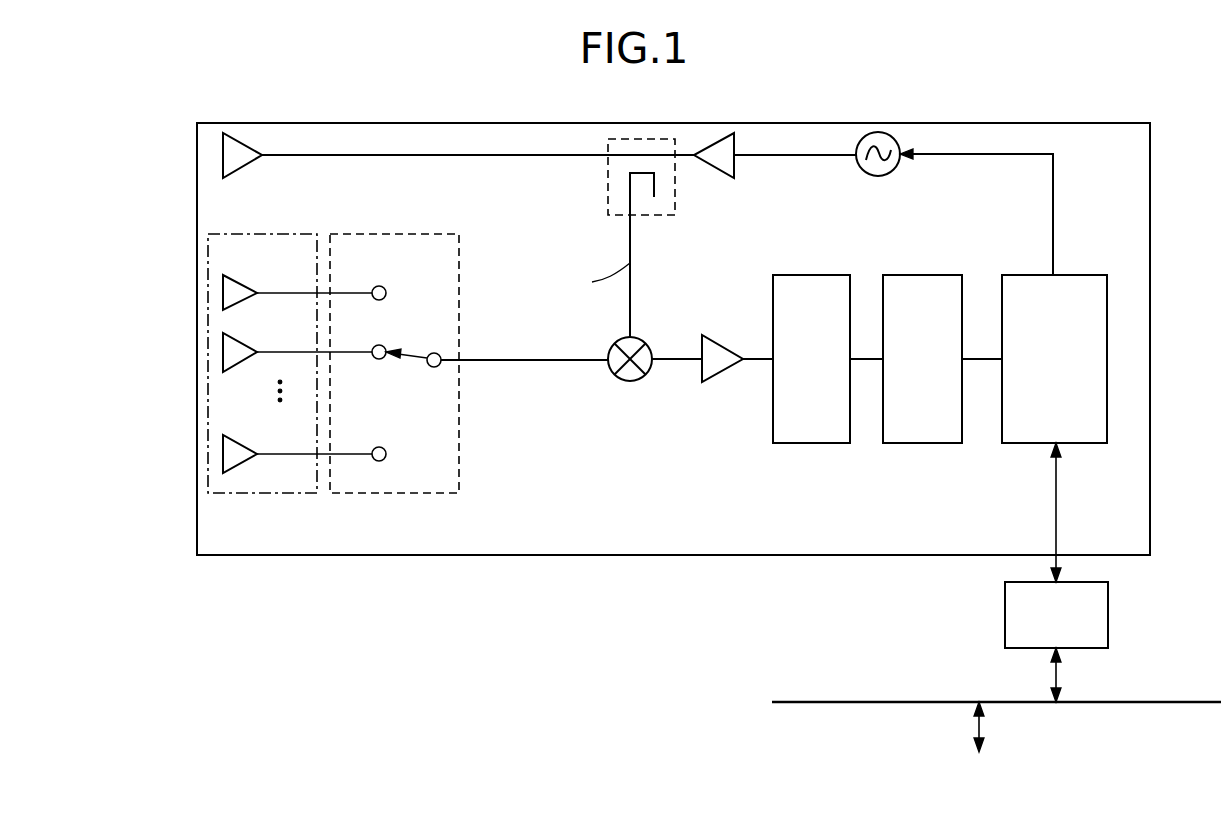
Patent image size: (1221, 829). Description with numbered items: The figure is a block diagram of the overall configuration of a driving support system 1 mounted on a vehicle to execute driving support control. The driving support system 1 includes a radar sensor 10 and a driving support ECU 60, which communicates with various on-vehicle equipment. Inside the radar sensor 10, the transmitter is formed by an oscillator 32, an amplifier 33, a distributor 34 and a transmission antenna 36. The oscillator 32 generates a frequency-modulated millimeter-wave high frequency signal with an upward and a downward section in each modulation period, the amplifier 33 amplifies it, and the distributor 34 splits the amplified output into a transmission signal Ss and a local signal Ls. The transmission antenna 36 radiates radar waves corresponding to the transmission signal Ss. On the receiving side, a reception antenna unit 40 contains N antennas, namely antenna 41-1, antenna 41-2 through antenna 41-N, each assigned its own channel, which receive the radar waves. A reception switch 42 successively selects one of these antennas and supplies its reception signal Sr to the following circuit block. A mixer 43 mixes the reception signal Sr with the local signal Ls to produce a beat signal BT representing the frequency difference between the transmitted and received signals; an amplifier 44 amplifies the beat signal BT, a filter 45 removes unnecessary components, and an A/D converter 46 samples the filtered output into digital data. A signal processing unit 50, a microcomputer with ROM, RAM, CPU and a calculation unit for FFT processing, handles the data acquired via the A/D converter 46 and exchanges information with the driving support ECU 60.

The driving support system 1 is at (864, 98).
The radar sensor 10 is at (1150, 480).
The oscillator 32 is at (884, 176).
The amplifier 33 is at (714, 167).
The distributor 34 is at (608, 172).
The transmission antenna 36 is at (241, 167).
The reception antenna unit 40 is at (292, 493).
The antenna 41-1 is at (243, 283).
The antenna 41-2 is at (243, 342).
The antenna 41-N is at (243, 444).
The reception switch 42 is at (415, 493).
The mixer 43 is at (636, 380).
The amplifier 44 is at (715, 375).
The filter 45 is at (805, 443).
The A/D converter 46 is at (935, 443).
The signal processing unit 50 is at (1107, 425).
The driving support ECU 60 is at (1108, 620).